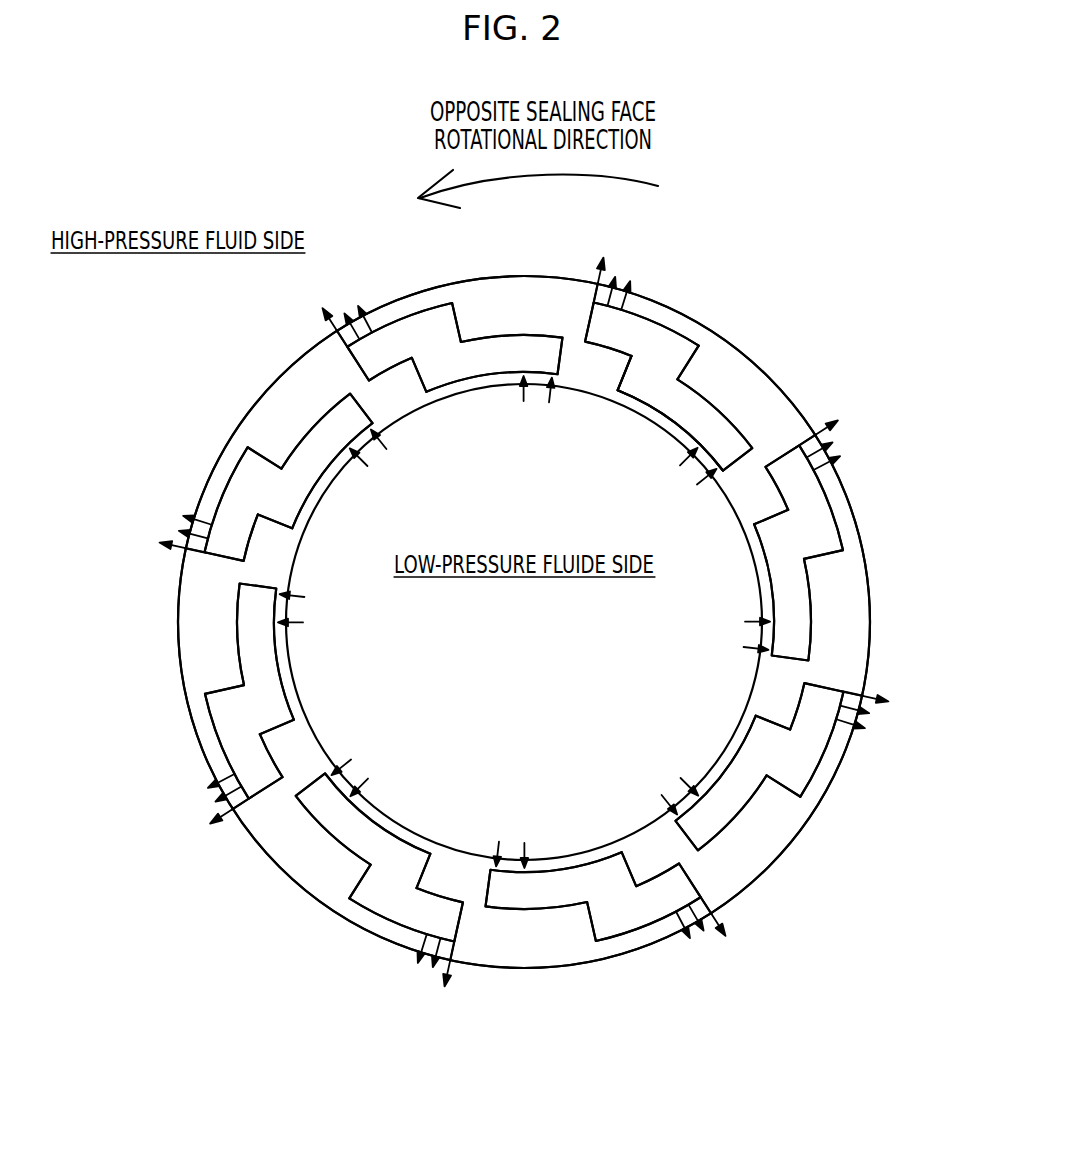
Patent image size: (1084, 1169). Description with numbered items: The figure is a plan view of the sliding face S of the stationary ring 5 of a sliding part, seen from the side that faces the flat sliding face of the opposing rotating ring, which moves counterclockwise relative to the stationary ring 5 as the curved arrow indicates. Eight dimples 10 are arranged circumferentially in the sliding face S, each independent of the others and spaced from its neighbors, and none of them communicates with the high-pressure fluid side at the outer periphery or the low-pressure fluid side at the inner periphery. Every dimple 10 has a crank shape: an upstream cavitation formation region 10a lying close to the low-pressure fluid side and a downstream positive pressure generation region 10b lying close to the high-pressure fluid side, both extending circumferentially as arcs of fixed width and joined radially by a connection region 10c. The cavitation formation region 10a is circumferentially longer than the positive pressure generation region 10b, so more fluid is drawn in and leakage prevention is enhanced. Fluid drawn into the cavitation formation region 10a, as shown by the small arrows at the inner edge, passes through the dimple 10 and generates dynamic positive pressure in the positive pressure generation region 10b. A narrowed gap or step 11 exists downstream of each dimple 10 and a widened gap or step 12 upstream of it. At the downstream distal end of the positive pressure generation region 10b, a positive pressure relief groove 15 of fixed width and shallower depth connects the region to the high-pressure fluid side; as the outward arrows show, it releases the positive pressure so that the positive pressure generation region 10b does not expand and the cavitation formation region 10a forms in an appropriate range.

The stationary ring 5 is at (688, 296).
The sliding face S is at (750, 400).
The dimple 10 is at (432, 307).
The cavitation formation region 10a is at (532, 352).
The positive pressure generation region 10b is at (378, 404).
The connection region 10c is at (448, 360).
The narrowed gap (step) 11 is at (617, 380).
The widened gap (step) 12 is at (715, 437).
The positive pressure relief groove 15 is at (590, 297).